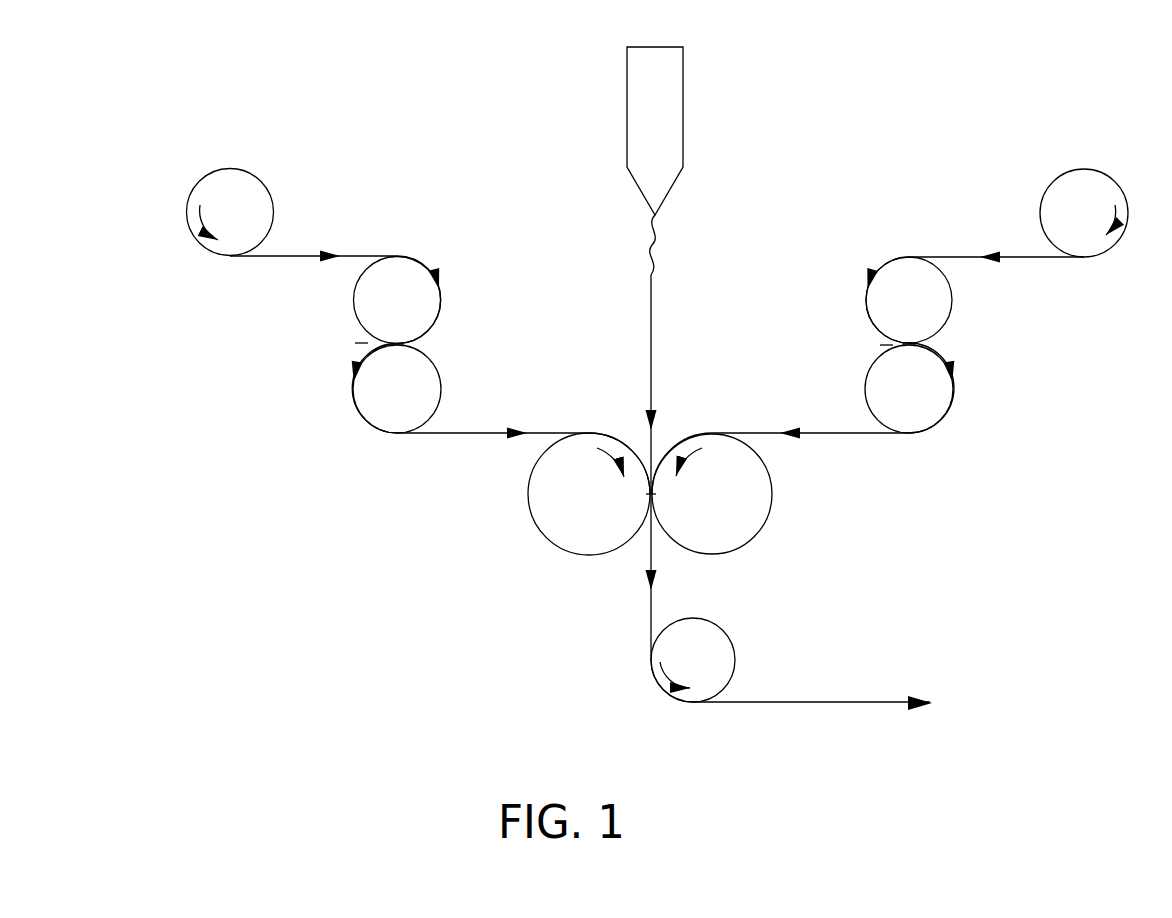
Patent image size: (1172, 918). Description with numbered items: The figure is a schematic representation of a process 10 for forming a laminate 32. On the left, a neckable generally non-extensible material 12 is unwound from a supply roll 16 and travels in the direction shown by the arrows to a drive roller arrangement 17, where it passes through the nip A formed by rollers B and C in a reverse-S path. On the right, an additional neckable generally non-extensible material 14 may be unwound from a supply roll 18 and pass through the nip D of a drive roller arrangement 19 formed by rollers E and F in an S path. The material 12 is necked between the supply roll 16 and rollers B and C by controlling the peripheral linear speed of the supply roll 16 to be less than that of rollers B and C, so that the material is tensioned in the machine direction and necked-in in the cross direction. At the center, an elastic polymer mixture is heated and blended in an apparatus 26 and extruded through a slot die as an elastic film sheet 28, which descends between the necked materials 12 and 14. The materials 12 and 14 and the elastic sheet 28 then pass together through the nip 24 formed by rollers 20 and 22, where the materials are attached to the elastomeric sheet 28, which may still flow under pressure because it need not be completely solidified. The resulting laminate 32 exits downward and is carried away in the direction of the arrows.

The process 10 is at (920, 88).
The neckable generally non-extensible material 12 is at (292, 258).
The additional neckable generally non-extensible material 14 is at (1030, 258).
The supply roll 16 is at (230, 168).
The drive roller arrangement 17 is at (434, 337).
The supply roll 18 is at (1083, 168).
The drive roller arrangement 19 is at (944, 341).
The roller 20 is at (543, 522).
The roller 22 is at (762, 510).
The nip 24 is at (626, 550).
The apparatus 26 is at (677, 84).
The elastic film sheet 28 is at (653, 332).
The laminate 32 is at (812, 706).
The nip A is at (365, 344).
The roller B is at (397, 300).
The roller C is at (397, 389).
The nip D is at (880, 345).
The roller E is at (909, 300).
The roller F is at (909, 389).